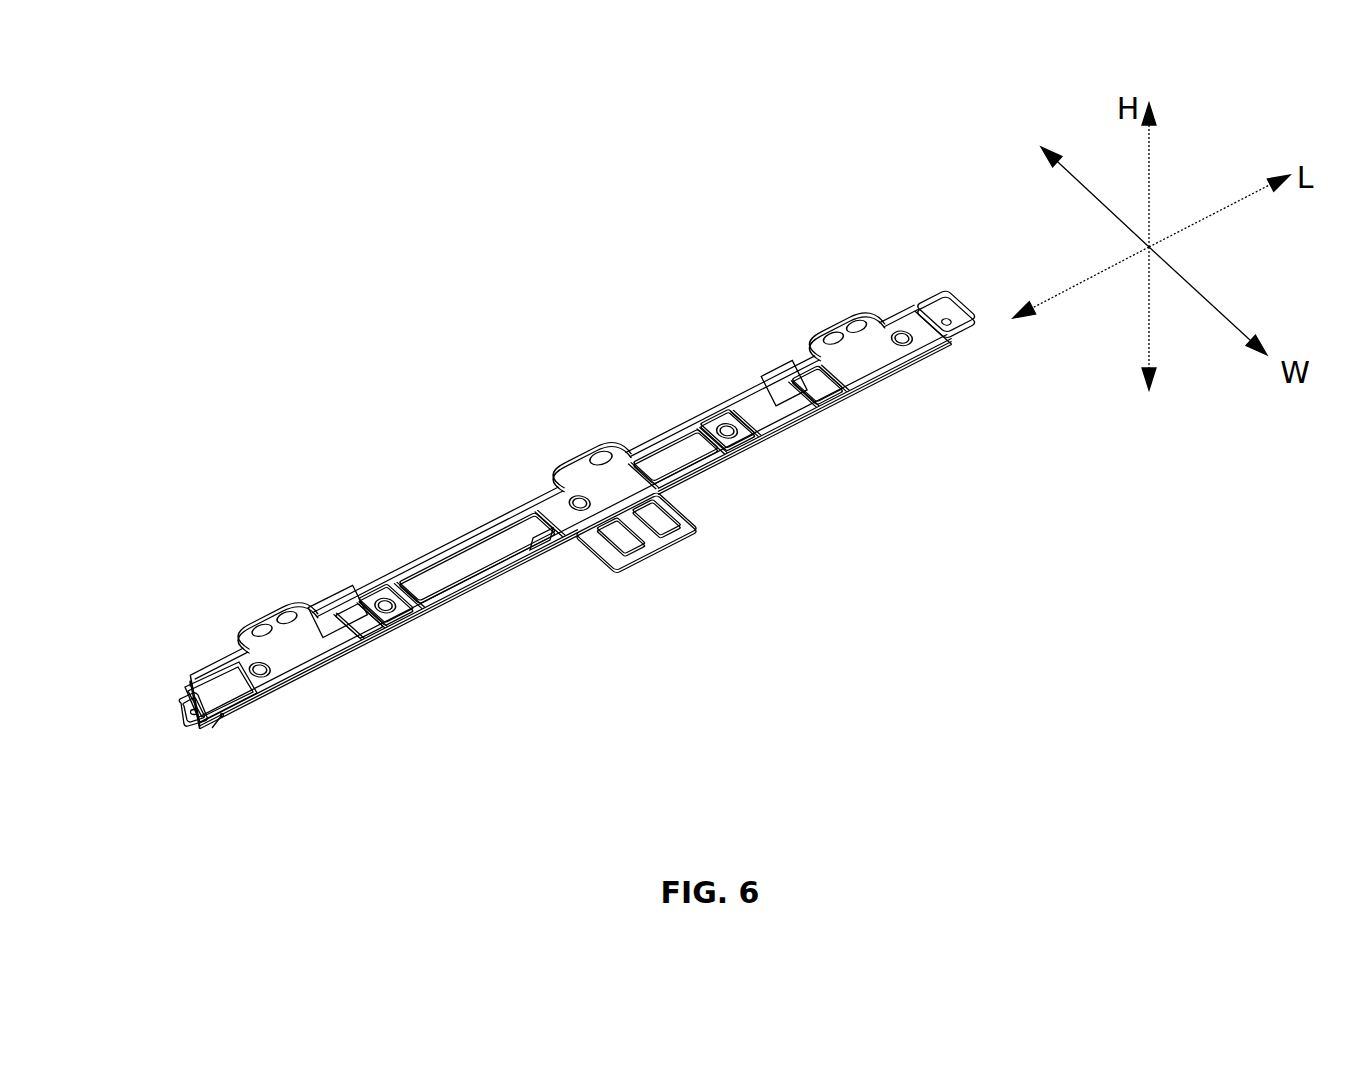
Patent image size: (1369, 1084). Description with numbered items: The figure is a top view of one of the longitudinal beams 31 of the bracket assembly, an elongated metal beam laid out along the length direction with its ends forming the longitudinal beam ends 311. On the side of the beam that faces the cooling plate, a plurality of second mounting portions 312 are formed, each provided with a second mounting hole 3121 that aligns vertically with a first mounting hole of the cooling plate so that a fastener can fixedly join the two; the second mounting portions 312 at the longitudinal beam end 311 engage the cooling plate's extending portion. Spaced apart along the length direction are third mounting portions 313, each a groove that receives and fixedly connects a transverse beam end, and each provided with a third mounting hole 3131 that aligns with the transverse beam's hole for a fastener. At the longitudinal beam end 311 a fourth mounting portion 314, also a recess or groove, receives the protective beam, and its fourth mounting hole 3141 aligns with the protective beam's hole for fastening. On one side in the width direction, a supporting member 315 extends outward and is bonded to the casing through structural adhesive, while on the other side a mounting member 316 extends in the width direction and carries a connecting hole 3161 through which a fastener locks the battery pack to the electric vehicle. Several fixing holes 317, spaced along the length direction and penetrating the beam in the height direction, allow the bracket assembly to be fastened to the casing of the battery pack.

The longitudinal beam 31 is at (400, 412).
The longitudinal beam end 311 is at (978, 340).
The second mounting portion 312 is at (770, 440).
The second mounting hole 3121 is at (712, 482).
The third mounting portion 313 is at (787, 407).
The third mounting hole 3131 is at (805, 375).
The fourth mounting portion 314 is at (973, 313).
The fourth mounting hole 3141 is at (923, 313).
The supporting member 315 is at (647, 533).
The mounting member 316 is at (862, 318).
The connecting hole 3161 is at (803, 318).
The fixing hole 317 is at (903, 347).